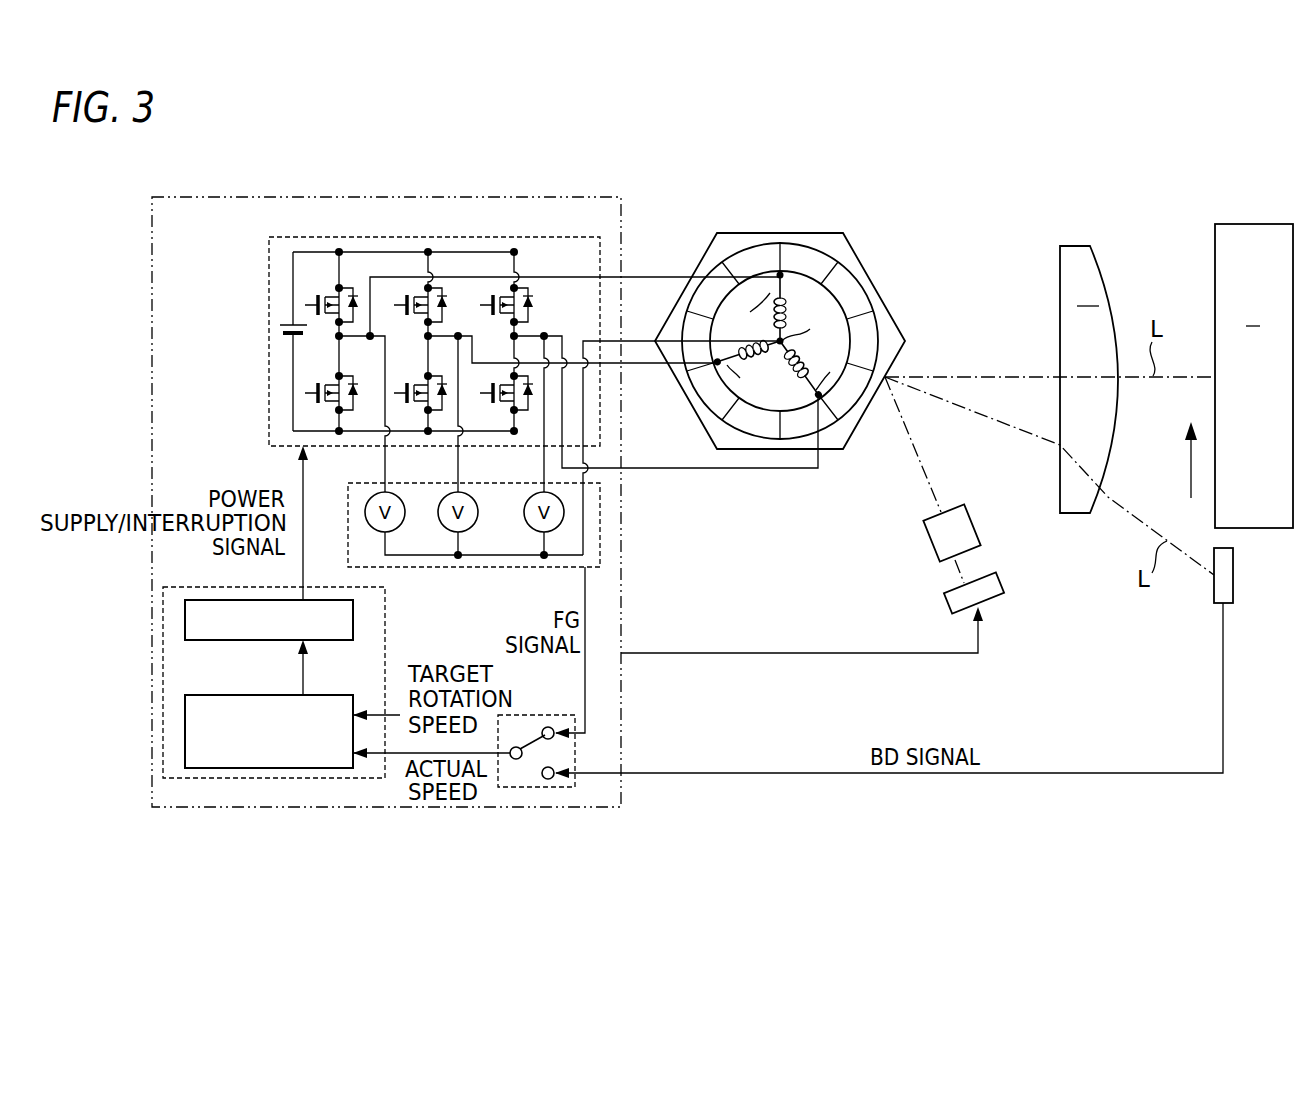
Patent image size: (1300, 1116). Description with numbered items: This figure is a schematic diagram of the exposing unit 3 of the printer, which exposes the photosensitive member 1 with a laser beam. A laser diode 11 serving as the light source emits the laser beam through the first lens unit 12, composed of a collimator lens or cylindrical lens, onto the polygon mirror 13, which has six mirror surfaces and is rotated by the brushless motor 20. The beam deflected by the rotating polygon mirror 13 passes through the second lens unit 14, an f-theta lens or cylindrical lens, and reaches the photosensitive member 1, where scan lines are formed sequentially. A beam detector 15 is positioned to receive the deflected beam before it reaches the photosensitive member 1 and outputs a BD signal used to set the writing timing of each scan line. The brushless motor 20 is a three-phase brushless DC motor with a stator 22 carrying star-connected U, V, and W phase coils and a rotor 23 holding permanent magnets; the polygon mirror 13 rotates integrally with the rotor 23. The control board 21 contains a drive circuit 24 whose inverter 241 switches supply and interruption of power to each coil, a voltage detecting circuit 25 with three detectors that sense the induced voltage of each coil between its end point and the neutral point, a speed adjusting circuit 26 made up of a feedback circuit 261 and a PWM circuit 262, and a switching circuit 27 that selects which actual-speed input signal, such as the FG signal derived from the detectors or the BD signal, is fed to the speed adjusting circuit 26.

The photosensitive member 1 is at (1254, 376).
The exposing unit 3 is at (1055, 333).
The laser diode 11 is at (946, 603).
The first lens unit 12 is at (928, 540).
The polygon mirror 13 is at (792, 233).
The second lens unit 14 is at (1089, 379).
The beam detector 15 is at (1233, 575).
The brushless motor 20 is at (809, 302).
The control board 21 is at (490, 197).
The stator 22 is at (790, 283).
The rotor 23 is at (876, 323).
The drive circuit 24 is at (434, 324).
The inverter 241 is at (395, 252).
The voltage detecting circuit 25 is at (600, 540).
The speed adjusting circuit 26 is at (246, 674).
The feedback circuit 261 is at (185, 711).
The PWM circuit 262 is at (185, 627).
The switching circuit 27 is at (535, 788).